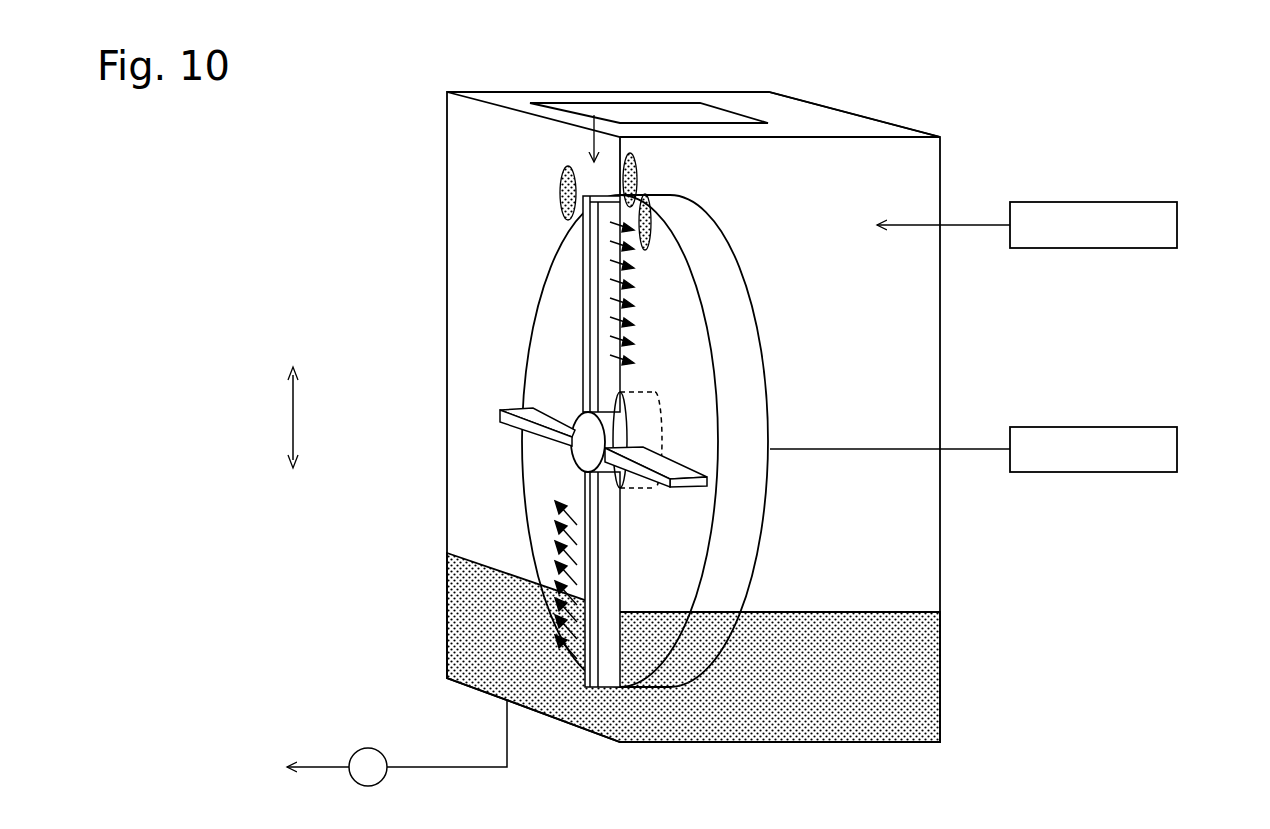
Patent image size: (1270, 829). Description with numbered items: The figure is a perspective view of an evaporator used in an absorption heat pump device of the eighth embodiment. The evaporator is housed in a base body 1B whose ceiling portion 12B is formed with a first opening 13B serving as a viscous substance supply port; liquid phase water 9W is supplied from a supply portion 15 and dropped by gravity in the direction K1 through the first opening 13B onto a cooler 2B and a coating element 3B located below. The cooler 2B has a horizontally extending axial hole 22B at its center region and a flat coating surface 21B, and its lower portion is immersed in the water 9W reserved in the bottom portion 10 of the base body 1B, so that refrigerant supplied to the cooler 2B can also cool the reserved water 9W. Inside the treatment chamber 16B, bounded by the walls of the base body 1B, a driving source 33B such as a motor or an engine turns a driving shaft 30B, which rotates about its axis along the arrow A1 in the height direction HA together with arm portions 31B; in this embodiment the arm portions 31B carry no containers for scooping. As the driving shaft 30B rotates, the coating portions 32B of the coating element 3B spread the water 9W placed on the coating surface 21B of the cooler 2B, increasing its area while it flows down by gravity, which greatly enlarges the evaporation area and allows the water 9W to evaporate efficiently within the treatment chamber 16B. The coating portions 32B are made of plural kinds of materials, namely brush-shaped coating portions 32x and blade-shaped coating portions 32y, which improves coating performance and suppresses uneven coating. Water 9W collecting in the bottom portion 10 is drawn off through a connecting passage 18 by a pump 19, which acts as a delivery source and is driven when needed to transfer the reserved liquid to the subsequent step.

The base body 1B is at (945, 141).
The ceiling portion 12B is at (842, 120).
The first opening 13B is at (710, 117).
The supply direction K1 is at (590, 137).
The liquid phase water 9W is at (641, 167).
The bottom portion 10 is at (490, 695).
The coating portions 32B is at (637, 295).
The brush-shaped coating portions 32x is at (683, 501).
The coating surface 21B is at (697, 392).
The arm portions 31B is at (593, 286).
The axial hole 22B is at (666, 392).
The driving shaft 30B is at (585, 455).
The coating element 3B is at (530, 454).
The blade-shaped coating portions 32y is at (547, 420).
The arrow A1 is at (625, 318).
The cooler 2B is at (700, 443).
The treatment chamber 16B is at (925, 333).
The supply portion 15 is at (1177, 217).
The driving source 33B is at (1177, 447).
The connecting passage 18 is at (452, 769).
The pump 19 is at (369, 786).
The height direction HA is at (280, 420).